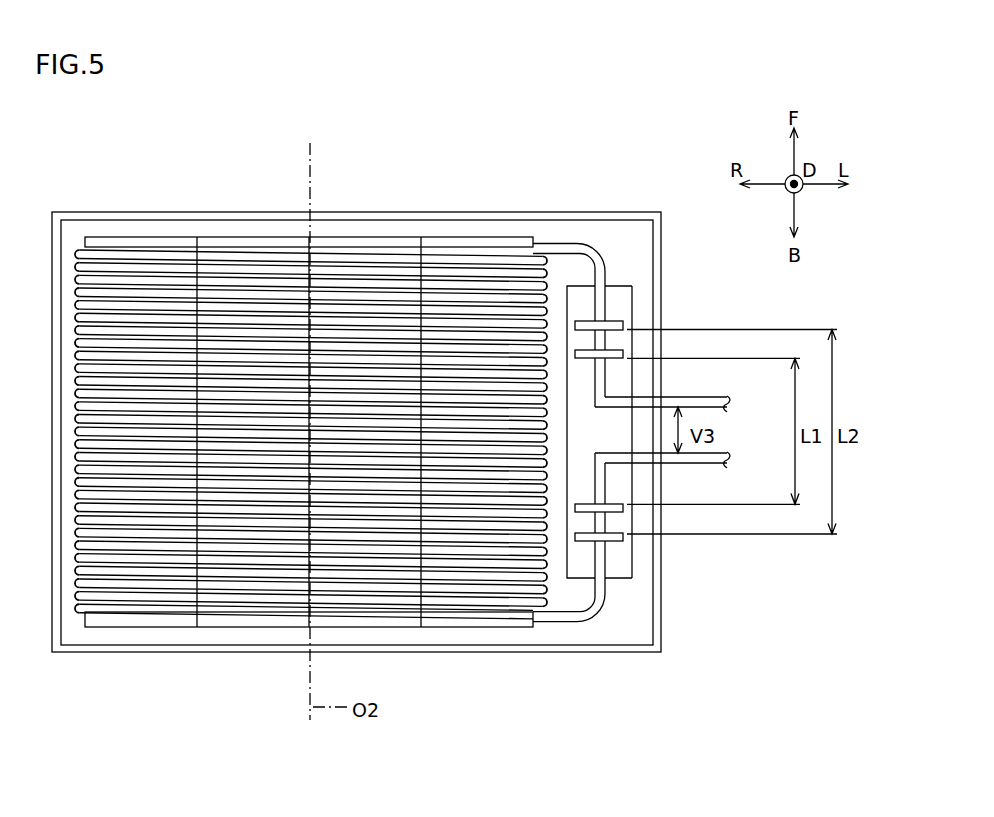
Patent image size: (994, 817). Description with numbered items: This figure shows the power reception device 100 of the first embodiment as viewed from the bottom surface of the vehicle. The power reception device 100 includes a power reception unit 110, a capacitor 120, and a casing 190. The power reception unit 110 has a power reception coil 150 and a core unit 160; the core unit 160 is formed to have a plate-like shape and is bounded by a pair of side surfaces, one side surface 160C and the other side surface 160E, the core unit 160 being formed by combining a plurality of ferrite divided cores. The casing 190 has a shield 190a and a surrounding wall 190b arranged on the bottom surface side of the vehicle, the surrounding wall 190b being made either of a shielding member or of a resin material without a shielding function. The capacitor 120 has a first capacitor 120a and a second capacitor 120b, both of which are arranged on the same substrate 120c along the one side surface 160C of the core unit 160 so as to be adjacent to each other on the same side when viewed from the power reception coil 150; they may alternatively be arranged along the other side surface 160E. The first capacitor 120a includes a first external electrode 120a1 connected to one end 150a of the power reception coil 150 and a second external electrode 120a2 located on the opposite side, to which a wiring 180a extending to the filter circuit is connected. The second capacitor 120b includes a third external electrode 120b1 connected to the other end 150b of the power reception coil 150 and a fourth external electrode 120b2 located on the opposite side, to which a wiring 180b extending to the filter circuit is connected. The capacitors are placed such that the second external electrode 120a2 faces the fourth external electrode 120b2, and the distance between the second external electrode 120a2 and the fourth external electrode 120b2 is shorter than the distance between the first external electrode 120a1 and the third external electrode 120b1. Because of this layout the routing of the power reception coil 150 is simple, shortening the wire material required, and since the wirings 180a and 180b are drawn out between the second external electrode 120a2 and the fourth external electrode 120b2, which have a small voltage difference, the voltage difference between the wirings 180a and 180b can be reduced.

The power reception device 100 is at (673, 700).
The power reception unit 110 is at (370, 167).
The capacitor 120 is at (618, 285).
The first capacitor 120a is at (637, 344).
The first external electrode 120a1 is at (616, 323).
The second external electrode 120a2 is at (687, 349).
The second capacitor 120b is at (637, 528).
The third external electrode 120b1 is at (617, 541).
The fourth external electrode 120b2 is at (688, 517).
The substrate 120c is at (632, 287).
The power reception coil 150 is at (350, 248).
The one end of power reception coil 150a is at (592, 250).
The other end of power reception coil 150b is at (597, 609).
The core unit 160 is at (260, 243).
The other side surface of core unit 160E is at (77, 243).
The one side surface of core unit 160C is at (545, 510).
The wiring 180a is at (703, 397).
The wiring 180b is at (703, 460).
The casing 190 is at (500, 170).
The shield 190a is at (477, 231).
The surrounding wall 190b is at (413, 217).